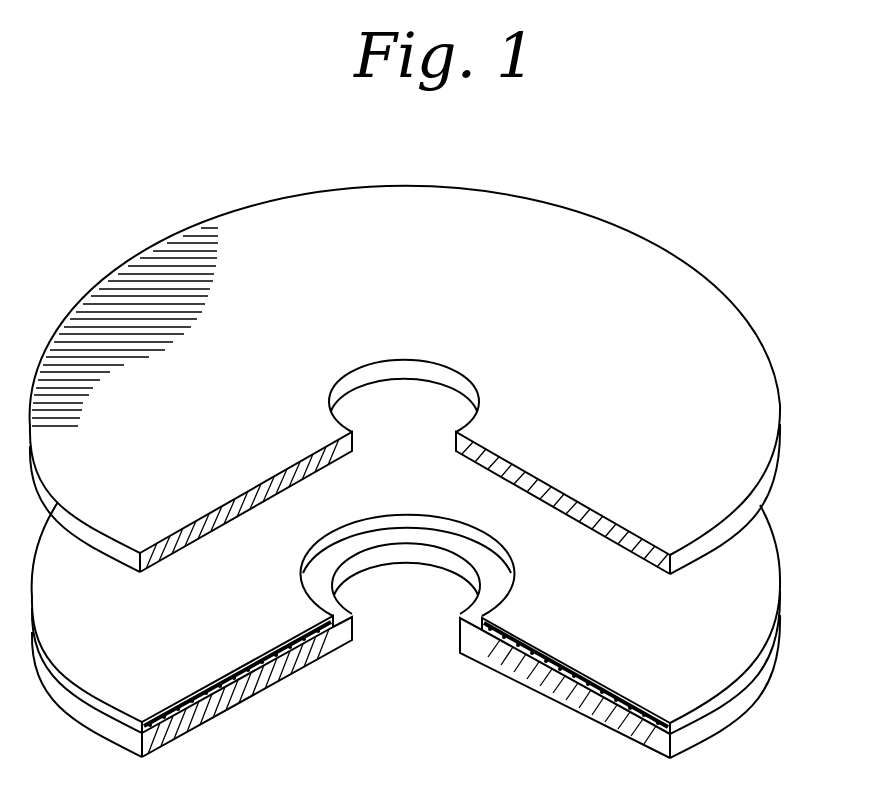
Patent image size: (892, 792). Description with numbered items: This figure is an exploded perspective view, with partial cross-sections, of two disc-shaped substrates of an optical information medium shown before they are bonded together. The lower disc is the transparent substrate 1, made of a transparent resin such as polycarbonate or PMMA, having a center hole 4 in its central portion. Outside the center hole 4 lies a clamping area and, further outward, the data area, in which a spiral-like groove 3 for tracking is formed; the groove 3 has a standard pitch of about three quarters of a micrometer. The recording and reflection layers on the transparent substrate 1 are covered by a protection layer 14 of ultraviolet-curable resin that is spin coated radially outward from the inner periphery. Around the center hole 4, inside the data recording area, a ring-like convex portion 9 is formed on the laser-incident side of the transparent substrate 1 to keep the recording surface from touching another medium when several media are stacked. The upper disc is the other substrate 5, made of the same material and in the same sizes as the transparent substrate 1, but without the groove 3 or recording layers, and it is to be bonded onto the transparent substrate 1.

The transparent substrate 1 is at (233, 698).
The groove for tracking 3 is at (592, 697).
The center hole 4 is at (401, 424).
The substrate 5 is at (640, 444).
The ring-like convex portion 9 is at (482, 650).
The protection layer 14 is at (262, 640).